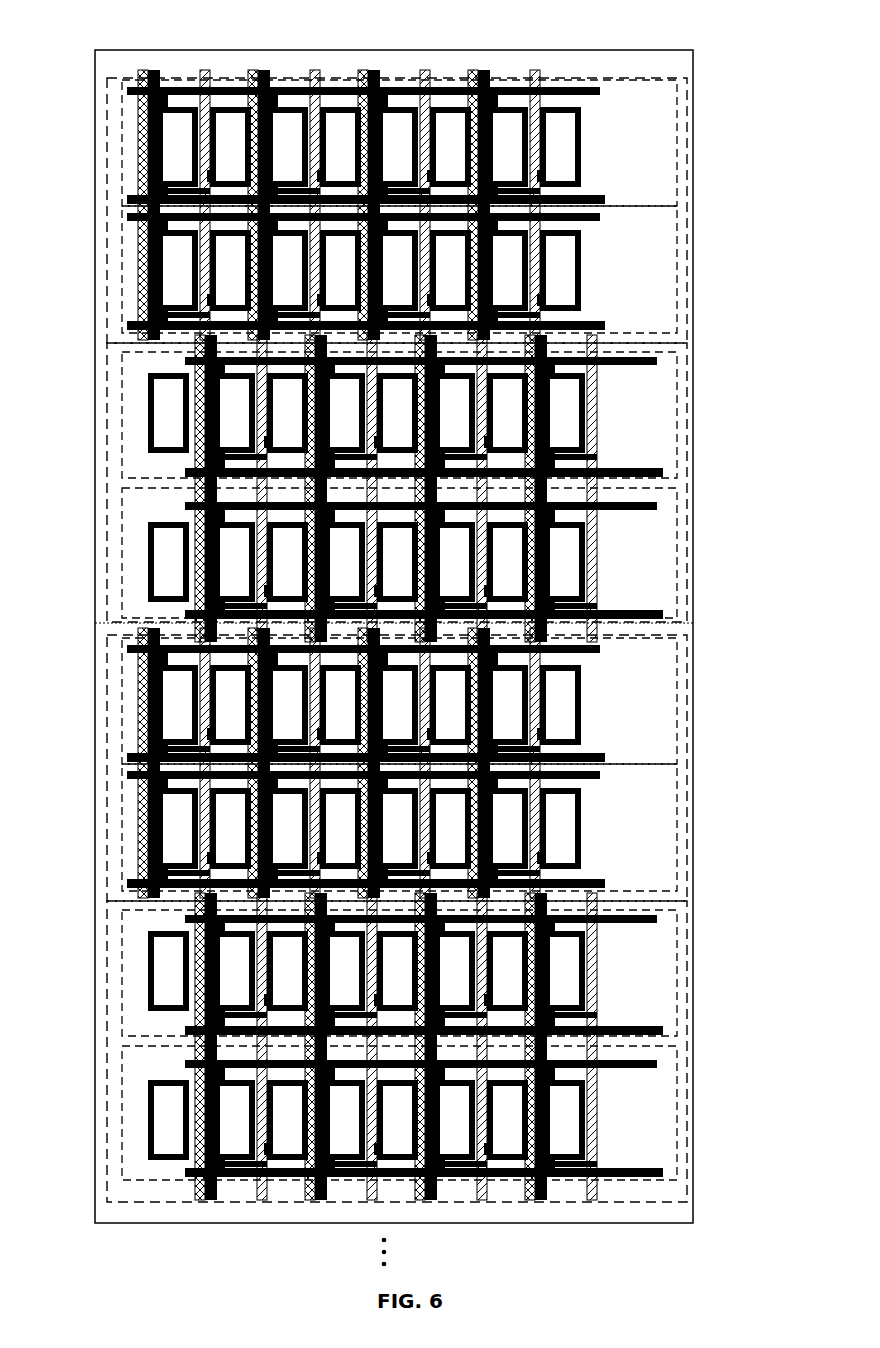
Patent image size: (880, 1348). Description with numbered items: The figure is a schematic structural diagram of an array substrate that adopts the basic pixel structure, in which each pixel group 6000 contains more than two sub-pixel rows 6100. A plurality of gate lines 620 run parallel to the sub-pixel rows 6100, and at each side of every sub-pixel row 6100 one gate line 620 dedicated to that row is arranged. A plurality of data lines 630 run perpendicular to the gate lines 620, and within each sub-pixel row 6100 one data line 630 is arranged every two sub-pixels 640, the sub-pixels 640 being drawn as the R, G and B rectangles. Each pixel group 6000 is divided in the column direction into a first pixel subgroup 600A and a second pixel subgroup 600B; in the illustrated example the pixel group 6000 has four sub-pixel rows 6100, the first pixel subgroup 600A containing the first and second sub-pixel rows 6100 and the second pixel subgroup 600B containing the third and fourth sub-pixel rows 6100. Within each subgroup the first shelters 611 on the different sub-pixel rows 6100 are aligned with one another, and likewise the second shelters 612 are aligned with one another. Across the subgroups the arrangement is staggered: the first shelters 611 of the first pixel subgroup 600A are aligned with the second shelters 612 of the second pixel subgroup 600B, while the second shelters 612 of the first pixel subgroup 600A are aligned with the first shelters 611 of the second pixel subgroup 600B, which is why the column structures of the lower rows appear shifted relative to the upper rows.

The pixel group 6000 is at (698, 64).
The sub-pixel row 6100 is at (673, 155).
The first pixel subgroup 600A is at (682, 205).
The second pixel subgroup 600B is at (678, 485).
The first shelter 611 is at (156, 72).
The second shelter 612 is at (205, 72).
The gate line 620 is at (592, 88).
The data line 630 is at (141, 122).
The sub-pixel 640 is at (173, 267).